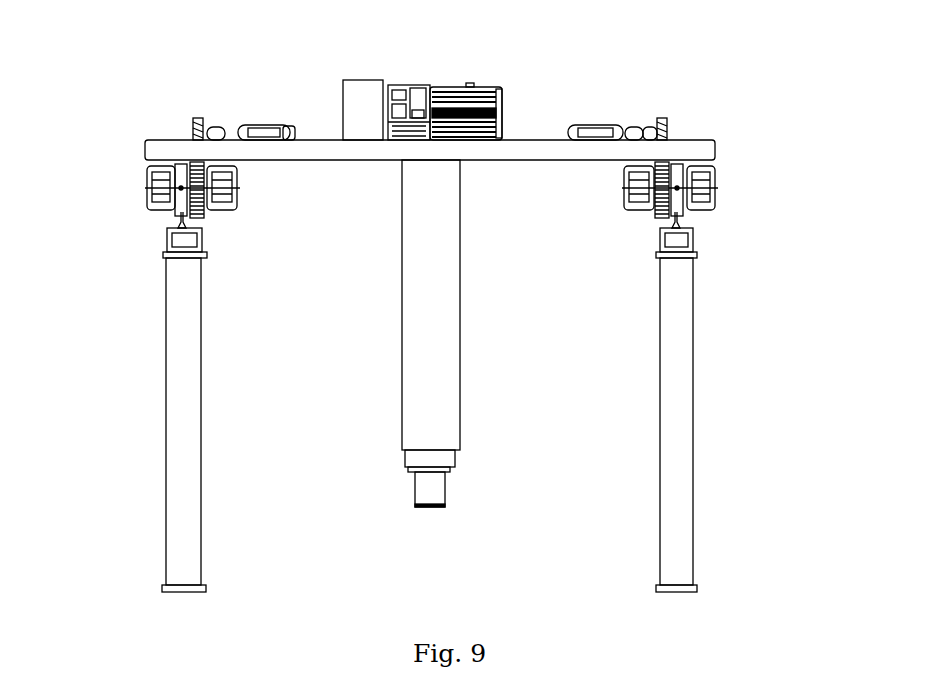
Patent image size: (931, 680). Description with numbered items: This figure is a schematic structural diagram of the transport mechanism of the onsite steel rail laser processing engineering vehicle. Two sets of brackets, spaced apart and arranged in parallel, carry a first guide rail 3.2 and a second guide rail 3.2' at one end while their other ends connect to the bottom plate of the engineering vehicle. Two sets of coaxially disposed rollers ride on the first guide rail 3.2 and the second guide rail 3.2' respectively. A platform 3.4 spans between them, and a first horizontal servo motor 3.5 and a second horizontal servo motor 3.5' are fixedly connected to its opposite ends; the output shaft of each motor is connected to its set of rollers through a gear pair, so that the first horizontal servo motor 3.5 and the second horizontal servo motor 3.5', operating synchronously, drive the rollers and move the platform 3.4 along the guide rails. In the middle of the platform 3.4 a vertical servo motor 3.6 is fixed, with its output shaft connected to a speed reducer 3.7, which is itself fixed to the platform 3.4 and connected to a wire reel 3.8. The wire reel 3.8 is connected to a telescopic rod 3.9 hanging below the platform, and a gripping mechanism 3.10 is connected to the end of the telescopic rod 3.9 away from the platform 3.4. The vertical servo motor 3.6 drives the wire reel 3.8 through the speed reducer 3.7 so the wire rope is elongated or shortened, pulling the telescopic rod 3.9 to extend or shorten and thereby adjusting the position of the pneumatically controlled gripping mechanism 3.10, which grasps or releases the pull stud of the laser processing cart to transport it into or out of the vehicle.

The first guide rail 3.2 is at (140, 258).
The second guide rail 3.2' is at (730, 259).
The platform 3.4 is at (185, 150).
The first horizontal servo motor 3.5 is at (239, 84).
The second horizontal servo motor 3.5' is at (617, 83).
The vertical servo motor 3.6 is at (458, 90).
The speed reducer 3.7 is at (365, 90).
The wire reel 3.8 is at (413, 94).
The telescopic rod 3.9 is at (430, 455).
The gripping mechanism 3.10 is at (430, 492).